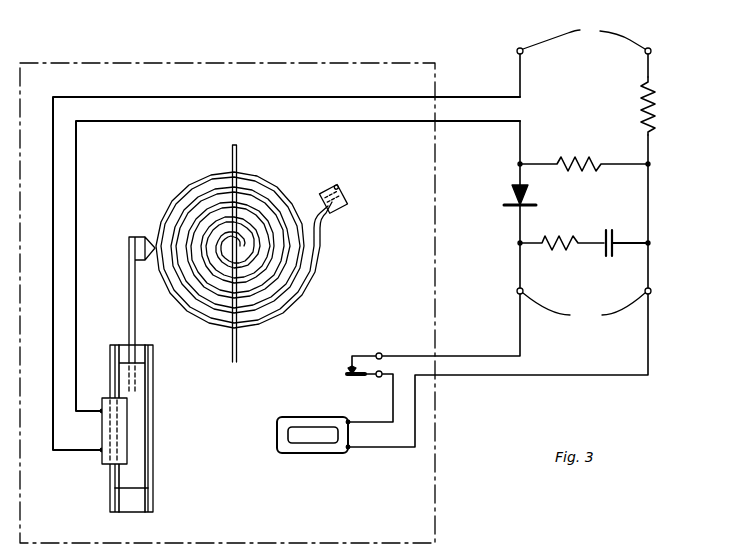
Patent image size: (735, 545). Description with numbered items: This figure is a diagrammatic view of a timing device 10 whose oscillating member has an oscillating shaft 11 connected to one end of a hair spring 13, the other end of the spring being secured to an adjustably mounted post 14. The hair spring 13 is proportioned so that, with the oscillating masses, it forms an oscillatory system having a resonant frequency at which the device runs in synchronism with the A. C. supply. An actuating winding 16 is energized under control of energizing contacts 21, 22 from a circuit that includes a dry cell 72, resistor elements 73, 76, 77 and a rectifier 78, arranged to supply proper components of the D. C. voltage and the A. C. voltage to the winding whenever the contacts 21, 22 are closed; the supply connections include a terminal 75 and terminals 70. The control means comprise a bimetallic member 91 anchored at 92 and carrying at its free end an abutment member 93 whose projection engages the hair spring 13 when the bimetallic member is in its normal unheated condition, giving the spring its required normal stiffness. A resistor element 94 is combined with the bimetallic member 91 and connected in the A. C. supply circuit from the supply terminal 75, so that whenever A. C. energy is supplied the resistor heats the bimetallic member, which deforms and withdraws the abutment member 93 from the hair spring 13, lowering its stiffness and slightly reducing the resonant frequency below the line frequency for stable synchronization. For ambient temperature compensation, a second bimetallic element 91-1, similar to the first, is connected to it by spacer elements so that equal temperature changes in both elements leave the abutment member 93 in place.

The timing device 10 is at (200, 87).
The oscillating shaft 11 is at (238, 153).
The hair spring 13 is at (170, 195).
The post 14 is at (346, 203).
The actuating winding 16 is at (278, 420).
The energizing contact 21 is at (360, 377).
The energizing contact 22 is at (359, 354).
The terminals 70 is at (584, 306).
The dry cell 72 is at (604, 252).
The resistor element 73 is at (556, 236).
The supply terminal 75 is at (584, 155).
The resistor element 76 is at (656, 106).
The resistor element 77 is at (585, 158).
The rectifier 78 is at (513, 201).
The bimetallic member 91 is at (112, 352).
The bimetallic element 91-1 is at (152, 362).
The anchor 92 is at (128, 497).
The abutment member 93 is at (129, 278).
The resistor element 94 is at (122, 430).